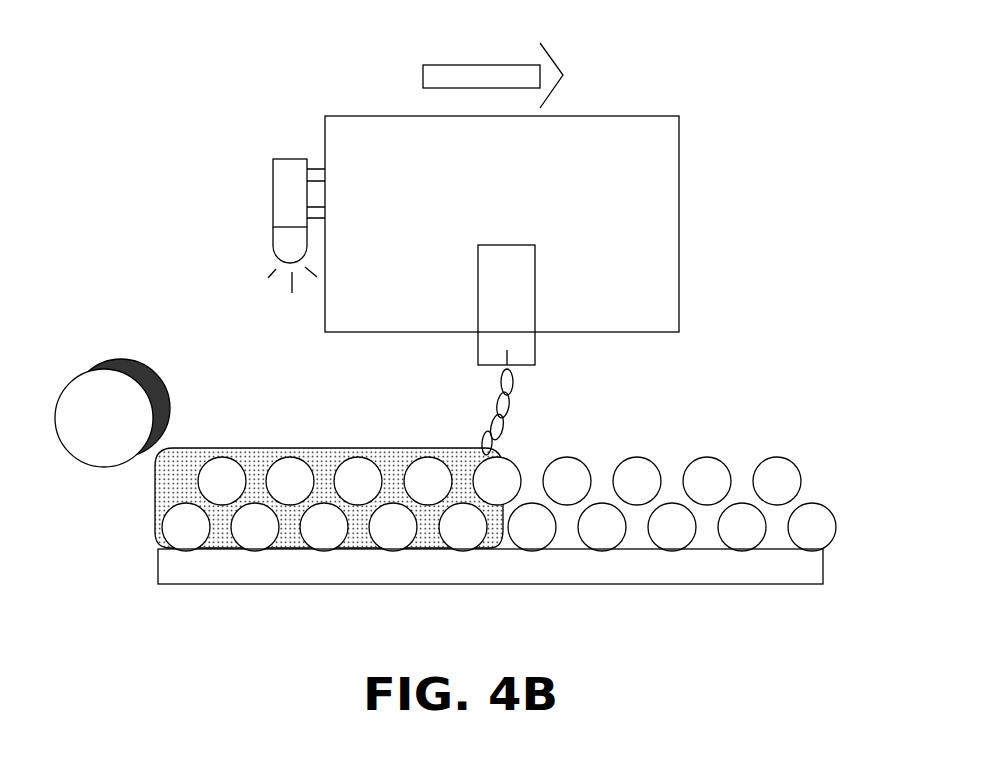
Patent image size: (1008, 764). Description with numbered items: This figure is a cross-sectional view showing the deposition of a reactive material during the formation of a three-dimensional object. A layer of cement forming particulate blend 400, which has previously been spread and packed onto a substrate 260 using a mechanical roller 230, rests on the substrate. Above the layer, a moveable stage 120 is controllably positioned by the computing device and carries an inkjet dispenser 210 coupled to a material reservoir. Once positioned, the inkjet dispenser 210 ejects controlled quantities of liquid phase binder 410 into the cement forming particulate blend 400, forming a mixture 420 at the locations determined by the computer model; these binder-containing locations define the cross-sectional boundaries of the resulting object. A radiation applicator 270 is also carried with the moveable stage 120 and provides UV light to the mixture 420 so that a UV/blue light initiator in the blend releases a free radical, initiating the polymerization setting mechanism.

The moveable stage 120 is at (502, 224).
The inkjet dispenser 210 is at (520, 305).
The mechanical roller 230 is at (105, 420).
The substrate 260 is at (678, 585).
The radiation applicator 270 is at (274, 193).
The cement forming particulate blend 400 is at (252, 528).
The liquid phase binder 410 is at (497, 420).
The mixture 420 is at (258, 448).